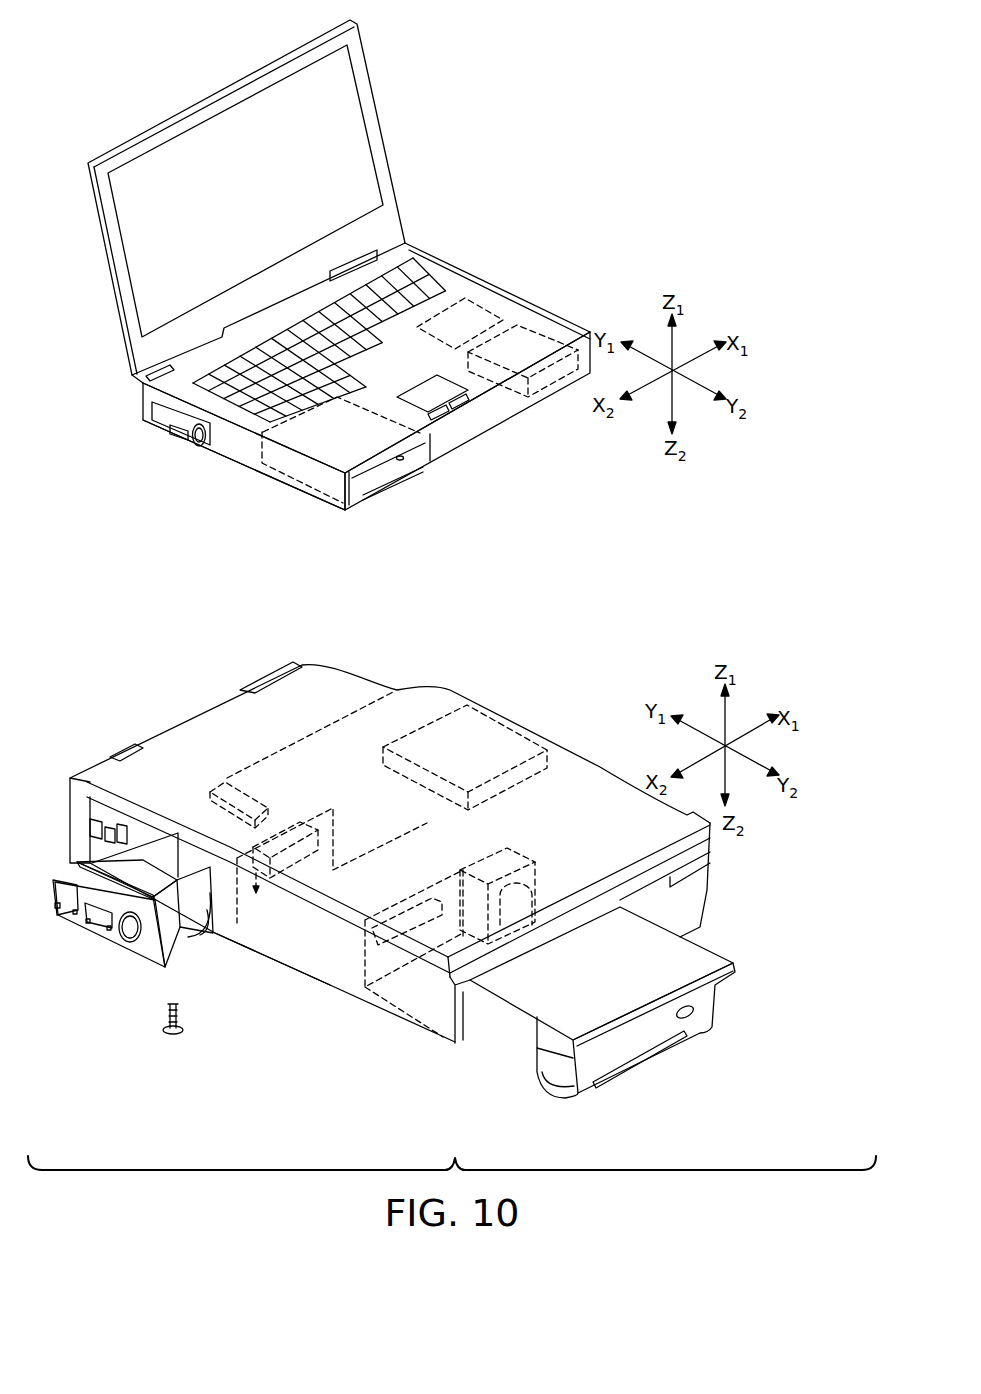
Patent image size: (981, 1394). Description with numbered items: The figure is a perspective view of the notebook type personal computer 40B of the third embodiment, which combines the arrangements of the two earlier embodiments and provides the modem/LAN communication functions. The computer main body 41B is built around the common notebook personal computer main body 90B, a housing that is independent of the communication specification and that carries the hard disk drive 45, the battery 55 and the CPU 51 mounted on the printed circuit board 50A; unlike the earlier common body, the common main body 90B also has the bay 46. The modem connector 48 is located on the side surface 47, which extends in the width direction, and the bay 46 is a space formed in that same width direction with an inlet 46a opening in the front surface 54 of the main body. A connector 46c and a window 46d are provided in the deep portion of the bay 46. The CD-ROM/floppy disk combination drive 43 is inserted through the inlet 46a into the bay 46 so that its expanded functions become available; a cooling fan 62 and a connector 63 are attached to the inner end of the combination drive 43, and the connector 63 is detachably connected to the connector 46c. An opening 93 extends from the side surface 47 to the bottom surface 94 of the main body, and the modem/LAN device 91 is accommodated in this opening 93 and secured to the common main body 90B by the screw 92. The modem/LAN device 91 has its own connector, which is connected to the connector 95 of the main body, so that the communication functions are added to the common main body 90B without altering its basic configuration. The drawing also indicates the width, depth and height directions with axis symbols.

The notebook type personal computer 40B is at (498, 42).
The computer main body 41B is at (399, 148).
The common notebook personal computer main body 90B is at (539, 280).
The modem connector 48 is at (449, 284).
The battery 55 is at (470, 308).
The hard disk drive 45 is at (552, 338).
The front surface 54 is at (458, 438).
The opening 93 is at (202, 446).
The bottom surface 94 is at (222, 462).
The side surface 47 is at (248, 458).
The bay 46 is at (281, 470).
The CD-ROM/floppy disk combination drive 43 is at (378, 502).
The printed circuit board 50A is at (325, 730).
The CPU 51 is at (457, 728).
The connector 95 is at (228, 785).
The window 46d is at (362, 810).
The connector 46c is at (300, 827).
The cooling fan 62 is at (518, 857).
The connector 63 is at (407, 905).
The modem/LAN device 91 is at (99, 958).
The screw 92 is at (165, 1022).
The inlet 46a is at (463, 1013).